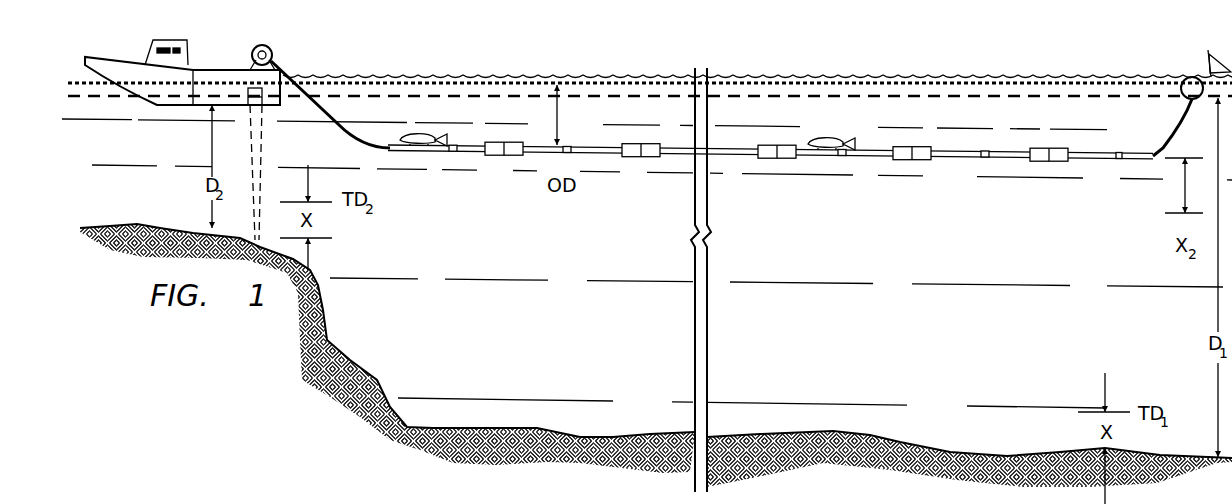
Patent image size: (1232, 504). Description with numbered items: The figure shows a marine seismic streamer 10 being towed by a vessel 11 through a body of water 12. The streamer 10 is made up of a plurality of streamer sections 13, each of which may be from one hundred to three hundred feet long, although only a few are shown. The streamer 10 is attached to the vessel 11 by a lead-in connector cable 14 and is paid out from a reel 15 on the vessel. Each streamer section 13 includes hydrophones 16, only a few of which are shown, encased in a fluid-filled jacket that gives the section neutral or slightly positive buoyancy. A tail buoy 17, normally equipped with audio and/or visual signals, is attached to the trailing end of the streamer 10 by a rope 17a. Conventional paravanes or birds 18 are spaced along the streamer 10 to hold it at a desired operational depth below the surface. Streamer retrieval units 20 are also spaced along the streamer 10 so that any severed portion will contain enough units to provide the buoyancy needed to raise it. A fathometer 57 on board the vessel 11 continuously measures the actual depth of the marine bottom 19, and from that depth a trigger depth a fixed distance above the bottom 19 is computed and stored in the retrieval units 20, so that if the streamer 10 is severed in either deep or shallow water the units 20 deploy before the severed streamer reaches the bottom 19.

The marine seismic streamer 10 is at (1031, 195).
The vessel 11 is at (205, 67).
The body of water 12 is at (527, 340).
The streamer section 13 is at (608, 157).
The lead-in connector cable 14 is at (343, 129).
The reel 15 is at (268, 46).
The hydrophone 16 is at (453, 152).
The tail buoy 17 is at (1187, 78).
The rope 17a is at (1161, 141).
The paravane or bird 18 is at (420, 147).
The marine bottom 19 is at (147, 227).
The streamer retrieval unit 20 is at (500, 160).
The fathometer 57 is at (248, 92).